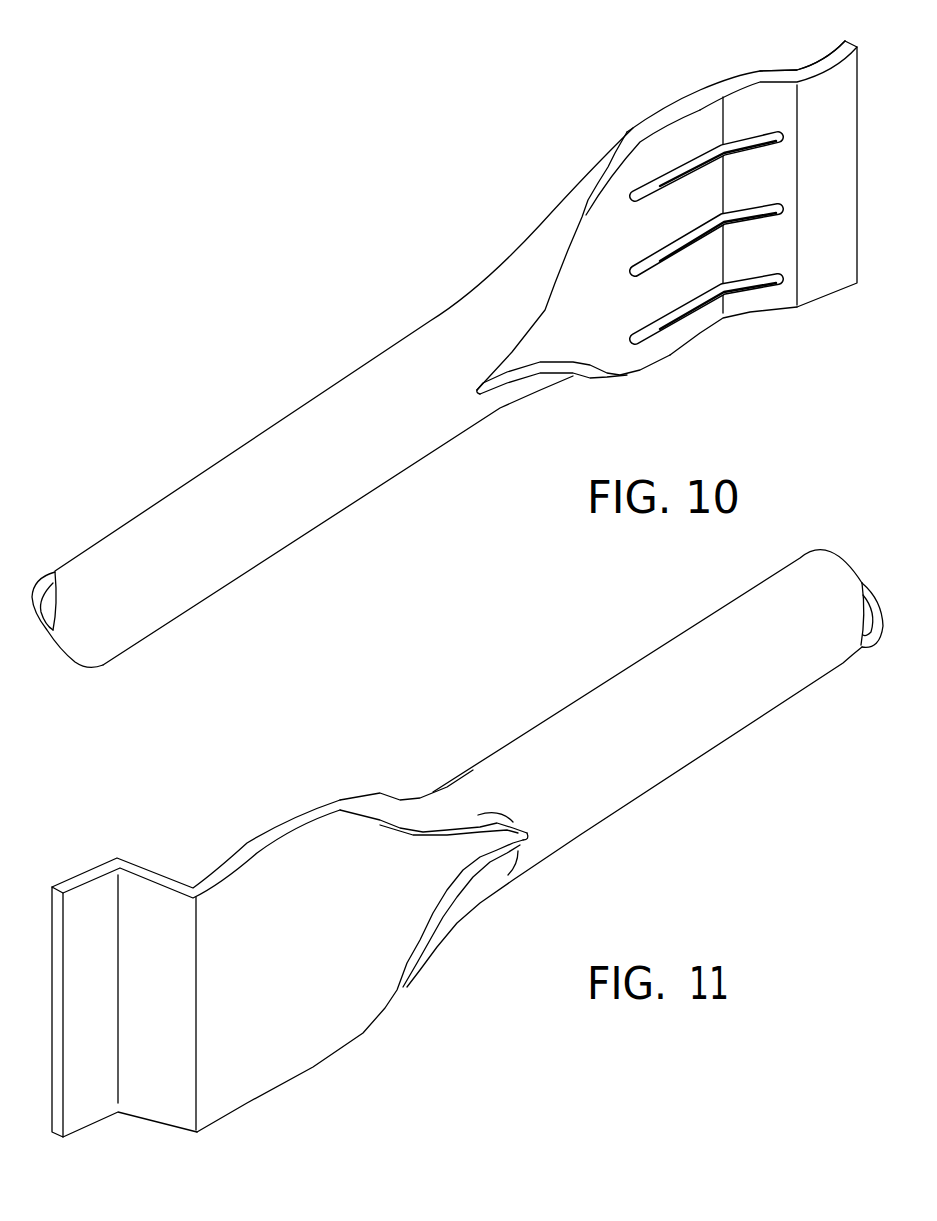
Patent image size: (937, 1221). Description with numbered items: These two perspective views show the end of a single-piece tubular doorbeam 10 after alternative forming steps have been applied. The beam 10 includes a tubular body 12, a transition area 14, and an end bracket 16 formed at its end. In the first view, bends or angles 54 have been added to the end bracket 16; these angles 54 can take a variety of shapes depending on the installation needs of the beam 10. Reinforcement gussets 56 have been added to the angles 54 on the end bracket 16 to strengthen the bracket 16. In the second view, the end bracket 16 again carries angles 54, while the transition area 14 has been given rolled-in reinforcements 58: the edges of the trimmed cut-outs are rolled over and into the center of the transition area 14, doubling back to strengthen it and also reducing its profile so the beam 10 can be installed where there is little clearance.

In FIG. 10, the tubular doorbeam 10 is at (438, 341).
In FIG. 10, the tubular body 12 is at (97, 536).
In FIG. 11, the tubular body 12 is at (645, 768).
In FIG. 10, the transition area 14 is at (555, 239).
In FIG. 11, the transition area 14 is at (407, 813).
In FIG. 10, the end bracket 16 is at (682, 201).
In FIG. 11, the end bracket 16 is at (196, 974).
In FIG. 10, the angles 54 is at (753, 72).
In FIG. 11, the angles 54 is at (115, 858).
In FIG. 10, the reinforcement gussets 56 is at (677, 312).
In FIG. 11, the reinforcements 58 is at (465, 887).